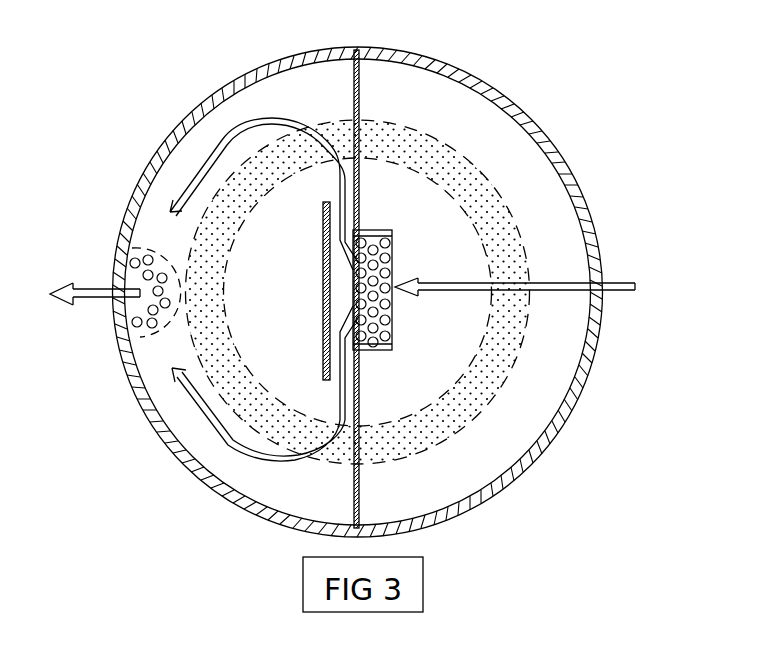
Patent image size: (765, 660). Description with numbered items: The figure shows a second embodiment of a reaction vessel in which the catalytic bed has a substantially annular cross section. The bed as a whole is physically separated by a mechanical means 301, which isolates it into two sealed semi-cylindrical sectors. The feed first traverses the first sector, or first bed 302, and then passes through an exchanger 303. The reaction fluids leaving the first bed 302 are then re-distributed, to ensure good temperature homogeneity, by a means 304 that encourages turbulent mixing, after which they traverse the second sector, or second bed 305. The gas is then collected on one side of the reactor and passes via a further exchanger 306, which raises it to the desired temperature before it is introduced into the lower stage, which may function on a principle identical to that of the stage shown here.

The mechanical means 301 is at (359, 100).
The first bed 302 is at (522, 237).
The exchanger 303 is at (393, 310).
The means encouraging turbulent mixing 304 is at (323, 308).
The second bed 305 is at (355, 461).
The exchanger 306 is at (157, 250).